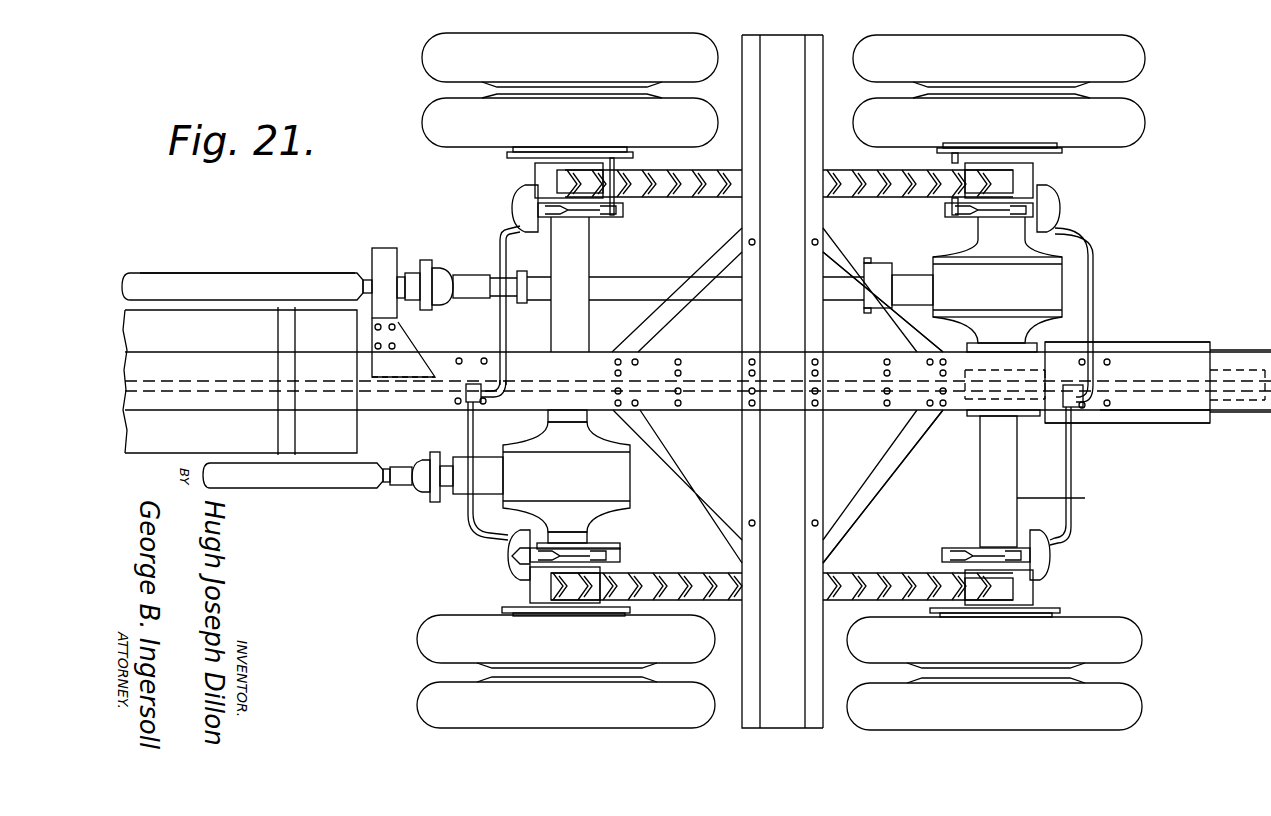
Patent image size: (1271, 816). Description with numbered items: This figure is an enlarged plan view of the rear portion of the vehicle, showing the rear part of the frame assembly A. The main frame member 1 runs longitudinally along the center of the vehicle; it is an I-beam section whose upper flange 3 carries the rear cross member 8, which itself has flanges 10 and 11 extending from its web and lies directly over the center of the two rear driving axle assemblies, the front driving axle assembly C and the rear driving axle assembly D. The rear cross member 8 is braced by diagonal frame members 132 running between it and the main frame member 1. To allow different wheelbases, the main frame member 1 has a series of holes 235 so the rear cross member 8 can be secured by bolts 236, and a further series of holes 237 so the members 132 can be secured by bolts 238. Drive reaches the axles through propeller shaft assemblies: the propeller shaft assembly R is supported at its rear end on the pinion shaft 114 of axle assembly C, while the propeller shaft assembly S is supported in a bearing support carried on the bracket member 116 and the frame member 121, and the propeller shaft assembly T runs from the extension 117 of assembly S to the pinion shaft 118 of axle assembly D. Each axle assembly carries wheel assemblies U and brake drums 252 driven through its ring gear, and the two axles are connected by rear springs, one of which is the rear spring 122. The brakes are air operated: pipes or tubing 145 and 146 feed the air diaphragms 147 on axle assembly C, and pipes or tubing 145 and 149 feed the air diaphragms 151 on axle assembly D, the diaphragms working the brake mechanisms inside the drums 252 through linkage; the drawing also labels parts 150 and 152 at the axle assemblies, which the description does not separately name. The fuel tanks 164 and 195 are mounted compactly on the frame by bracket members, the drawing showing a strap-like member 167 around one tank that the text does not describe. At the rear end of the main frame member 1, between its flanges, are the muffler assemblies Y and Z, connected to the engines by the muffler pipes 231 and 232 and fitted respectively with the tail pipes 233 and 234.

The main frame member 1 is at (1130, 365).
The flange 3 is at (698, 366).
The rear cross member 8 is at (775, 728).
The flange 10 is at (803, 712).
The flange 11 is at (822, 712).
The pinion shaft 114 is at (470, 525).
The bracket member 116 is at (400, 348).
The extension 117 is at (372, 275).
The pinion shaft 118 is at (890, 272).
The frame member 121 is at (385, 248).
The rear spring 122 is at (722, 168).
The diagonal frame member 132 is at (660, 300).
The pipe or tubing 145 is at (185, 410).
The pipe or tubing 146 is at (503, 235).
The air diaphragm 147 is at (512, 195).
The pipe or tubing 149 is at (1090, 240).
The brace 150 is at (870, 488).
The air diaphragm 151 is at (1052, 553).
The brake chamber 152 is at (1055, 195).
The fuel tank 164 is at (327, 465).
The strap 167 is at (290, 310).
The fuel tank 195 is at (190, 310).
The muffler pipe 231 is at (1040, 333).
The muffler pipe 232 is at (1000, 413).
The tail pipe 233 is at (1222, 350).
The tail pipe 234 is at (1222, 412).
The holes 235 is at (680, 410).
The bolts 236 is at (810, 350).
The holes 237 is at (458, 404).
The bolts 238 is at (678, 405).
The brake drum 252 is at (507, 155).
The wheel assembly U is at (421, 116).
The propeller shaft assembly S is at (160, 273).
The front driving axle assembly C is at (548, 250).
The propeller shaft assembly T is at (640, 278).
The propeller shaft assembly R is at (370, 488).
The muffler assembly Y is at (1180, 342).
The muffler assembly Z is at (1180, 425).
The frame assembly A is at (1150, 413).
The rear driving axle assembly D is at (1036, 382).